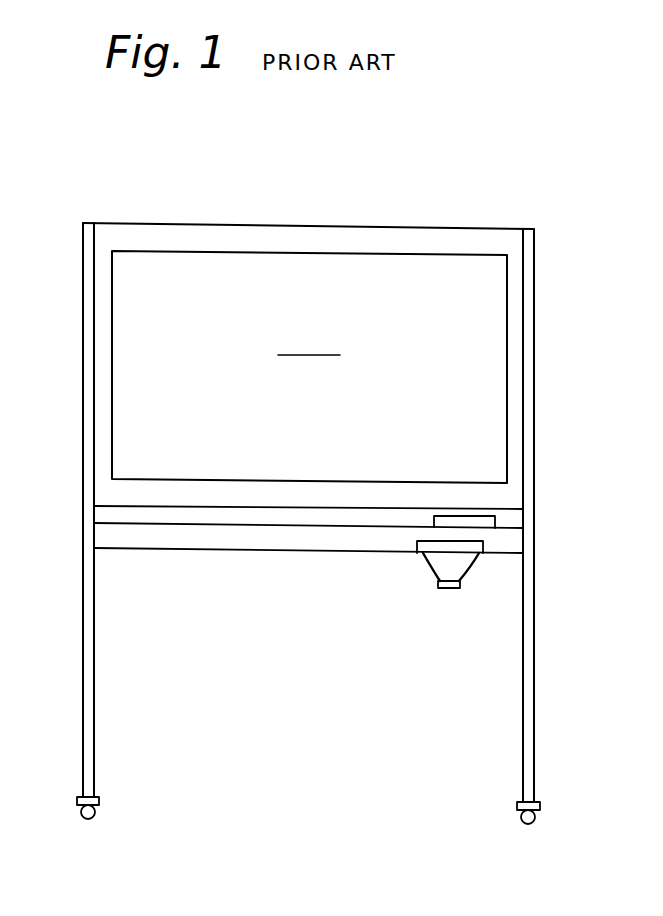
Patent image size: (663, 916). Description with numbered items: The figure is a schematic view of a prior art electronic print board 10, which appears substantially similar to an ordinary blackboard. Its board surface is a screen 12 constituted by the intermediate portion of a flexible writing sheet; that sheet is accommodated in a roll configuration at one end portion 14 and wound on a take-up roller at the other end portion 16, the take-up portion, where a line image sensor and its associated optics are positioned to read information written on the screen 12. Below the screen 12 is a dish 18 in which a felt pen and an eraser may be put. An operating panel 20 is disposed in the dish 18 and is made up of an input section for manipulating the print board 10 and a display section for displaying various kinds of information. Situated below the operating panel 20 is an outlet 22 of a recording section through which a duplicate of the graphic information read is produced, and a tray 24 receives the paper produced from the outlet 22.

The electronic print board 10 is at (531, 222).
The screen 12 is at (172, 262).
The left end portion 14 is at (535, 330).
The left end portion (take-up portion) 16 is at (83, 333).
The dish 18 is at (120, 523).
The operating panel 20 is at (480, 517).
The outlet 22 is at (430, 547).
The tray 24 is at (440, 572).